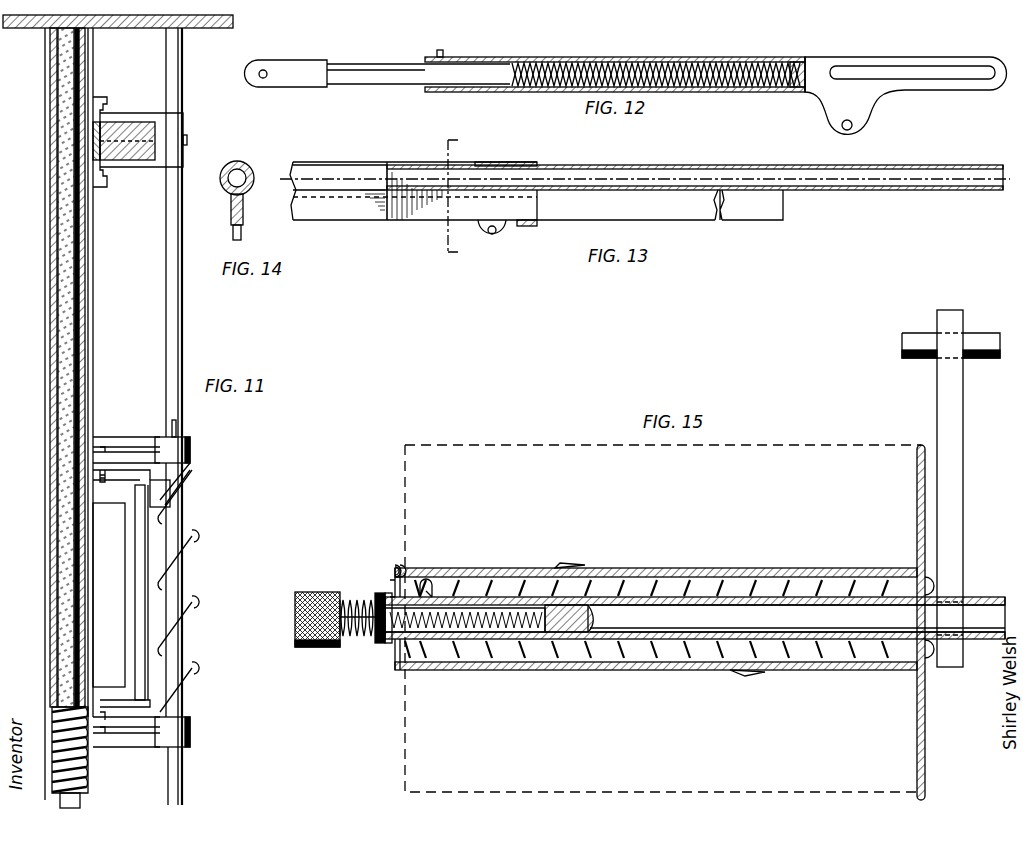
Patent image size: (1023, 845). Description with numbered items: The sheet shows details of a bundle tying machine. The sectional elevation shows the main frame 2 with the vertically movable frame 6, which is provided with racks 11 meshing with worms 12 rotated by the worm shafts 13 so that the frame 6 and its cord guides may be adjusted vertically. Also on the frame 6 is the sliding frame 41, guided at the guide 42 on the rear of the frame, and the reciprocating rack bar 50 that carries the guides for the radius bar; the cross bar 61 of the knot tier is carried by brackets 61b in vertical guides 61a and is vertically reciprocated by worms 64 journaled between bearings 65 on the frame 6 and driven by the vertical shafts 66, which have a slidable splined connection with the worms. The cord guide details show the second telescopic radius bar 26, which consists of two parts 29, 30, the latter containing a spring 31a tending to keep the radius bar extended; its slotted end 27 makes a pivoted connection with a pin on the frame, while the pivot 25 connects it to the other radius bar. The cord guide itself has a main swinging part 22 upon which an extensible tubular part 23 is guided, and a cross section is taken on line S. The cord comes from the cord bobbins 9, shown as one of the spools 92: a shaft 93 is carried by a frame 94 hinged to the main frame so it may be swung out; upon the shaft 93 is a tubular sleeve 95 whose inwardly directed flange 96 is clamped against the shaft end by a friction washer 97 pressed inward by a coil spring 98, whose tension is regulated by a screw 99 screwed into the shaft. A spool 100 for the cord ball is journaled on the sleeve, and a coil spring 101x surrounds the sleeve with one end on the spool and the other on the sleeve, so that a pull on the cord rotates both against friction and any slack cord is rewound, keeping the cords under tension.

In FIG. 11, the main frame 2 is at (118, 33).
In FIG. 11, the vertically movable frame 6 is at (45, 434).
In FIG. 11, the racks 11 is at (52, 494).
In FIG. 11, the worm shafts 13 is at (66, 603).
In FIG. 11, the worms 12 is at (86, 773).
In FIG. 11, the vertical shafts 66 is at (162, 416).
In FIG. 11, the guide 42 is at (118, 120).
In FIG. 11, the sliding frame 41 is at (128, 130).
In FIG. 11, the reciprocating rack bar 50 is at (104, 155).
In FIG. 11, the bearings 65 is at (159, 583).
In FIG. 11, the cross bar 61 is at (160, 494).
In FIG. 11, the vertical guides 61a is at (138, 622).
In FIG. 11, the brackets 61b is at (121, 595).
In FIG. 11, the worms 64 is at (191, 591).
In FIG. 12, the radius bar part 29 is at (378, 62).
In FIG. 12, the second telescopic radius bar 26 is at (615, 63).
In FIG. 12, the radius bar part 30 is at (656, 60).
In FIG. 12, the spring 31a is at (742, 80).
In FIG. 12, the slotted end 27 is at (875, 68).
In FIG. 12, the pivot 25 is at (853, 127).
In FIG. 13, the swinging part 22 is at (330, 162).
In FIG. 14, the swinging part 22 is at (243, 198).
In FIG. 13, the extensible tubular part 23 is at (818, 190).
In FIG. 14, the extensible tubular part 23 is at (247, 172).
In FIG. 13, the section line S is at (459, 197).
In FIG. 15, the cord bobbins 9 is at (665, 622).
In FIG. 15, the spools 92 is at (653, 569).
In FIG. 15, the shaft 93 is at (695, 618).
In FIG. 15, the frame 94 is at (951, 488).
In FIG. 15, the tubular sleeve 95 is at (590, 600).
In FIG. 15, the inwardly directed flange 96 is at (378, 643).
In FIG. 15, the friction washer 97 is at (382, 596).
In FIG. 15, the coil spring 98 is at (352, 603).
In FIG. 15, the screw 99 is at (298, 610).
In FIG. 15, the spool 100 is at (618, 670).
In FIG. 15, the coil spring 101x is at (720, 658).